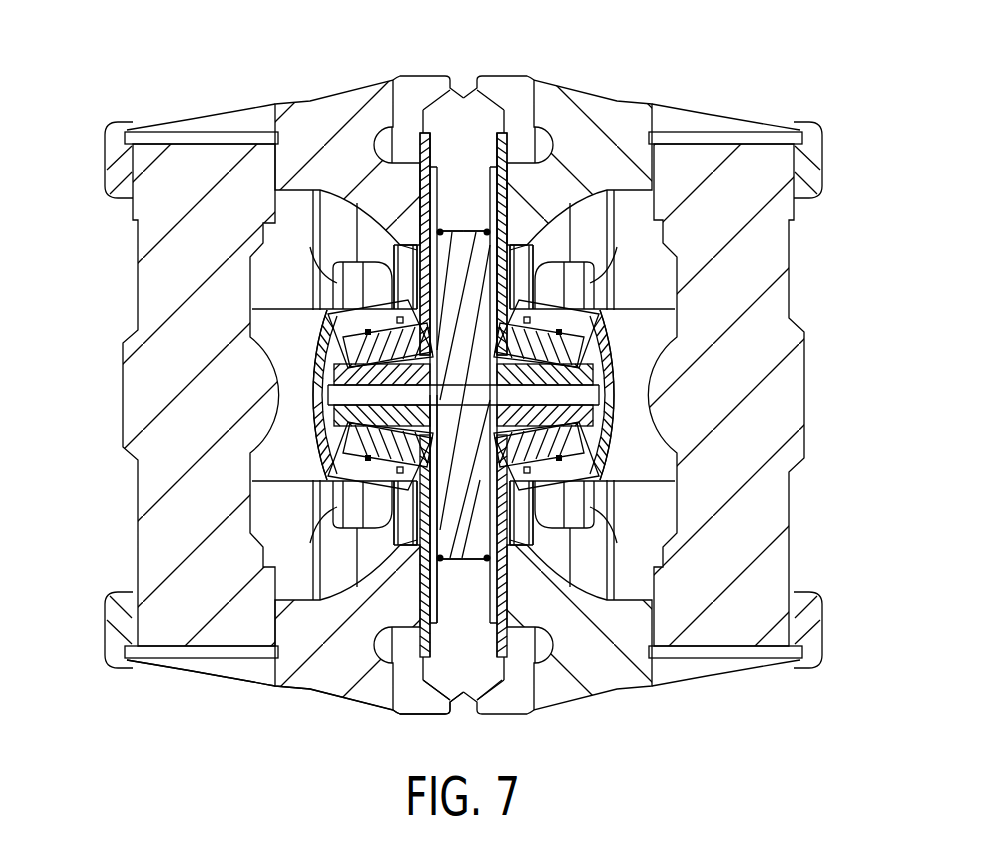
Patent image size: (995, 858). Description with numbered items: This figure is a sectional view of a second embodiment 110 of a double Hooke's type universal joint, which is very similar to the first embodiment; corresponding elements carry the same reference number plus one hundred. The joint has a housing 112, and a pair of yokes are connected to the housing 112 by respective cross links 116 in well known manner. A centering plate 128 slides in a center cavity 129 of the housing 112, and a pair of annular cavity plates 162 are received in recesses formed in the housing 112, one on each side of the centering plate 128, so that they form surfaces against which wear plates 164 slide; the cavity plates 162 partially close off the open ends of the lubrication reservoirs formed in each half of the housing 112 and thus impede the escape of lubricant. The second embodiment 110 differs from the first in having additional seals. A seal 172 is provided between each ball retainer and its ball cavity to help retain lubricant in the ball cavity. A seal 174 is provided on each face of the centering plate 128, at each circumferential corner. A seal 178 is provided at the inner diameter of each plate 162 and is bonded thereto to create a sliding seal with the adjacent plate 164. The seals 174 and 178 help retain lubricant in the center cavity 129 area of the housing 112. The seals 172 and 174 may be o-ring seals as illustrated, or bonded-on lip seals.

The second embodiment 110 is at (713, 89).
The housing 112 is at (312, 692).
The cross link 116 is at (124, 286).
The centering plate 128 is at (470, 231).
The center cavity 129 is at (493, 672).
The cavity plate 162 is at (426, 135).
The wear plate 164 is at (459, 231).
The seal 172 is at (325, 322).
The seal 174 is at (442, 557).
The seal 178 is at (417, 241).